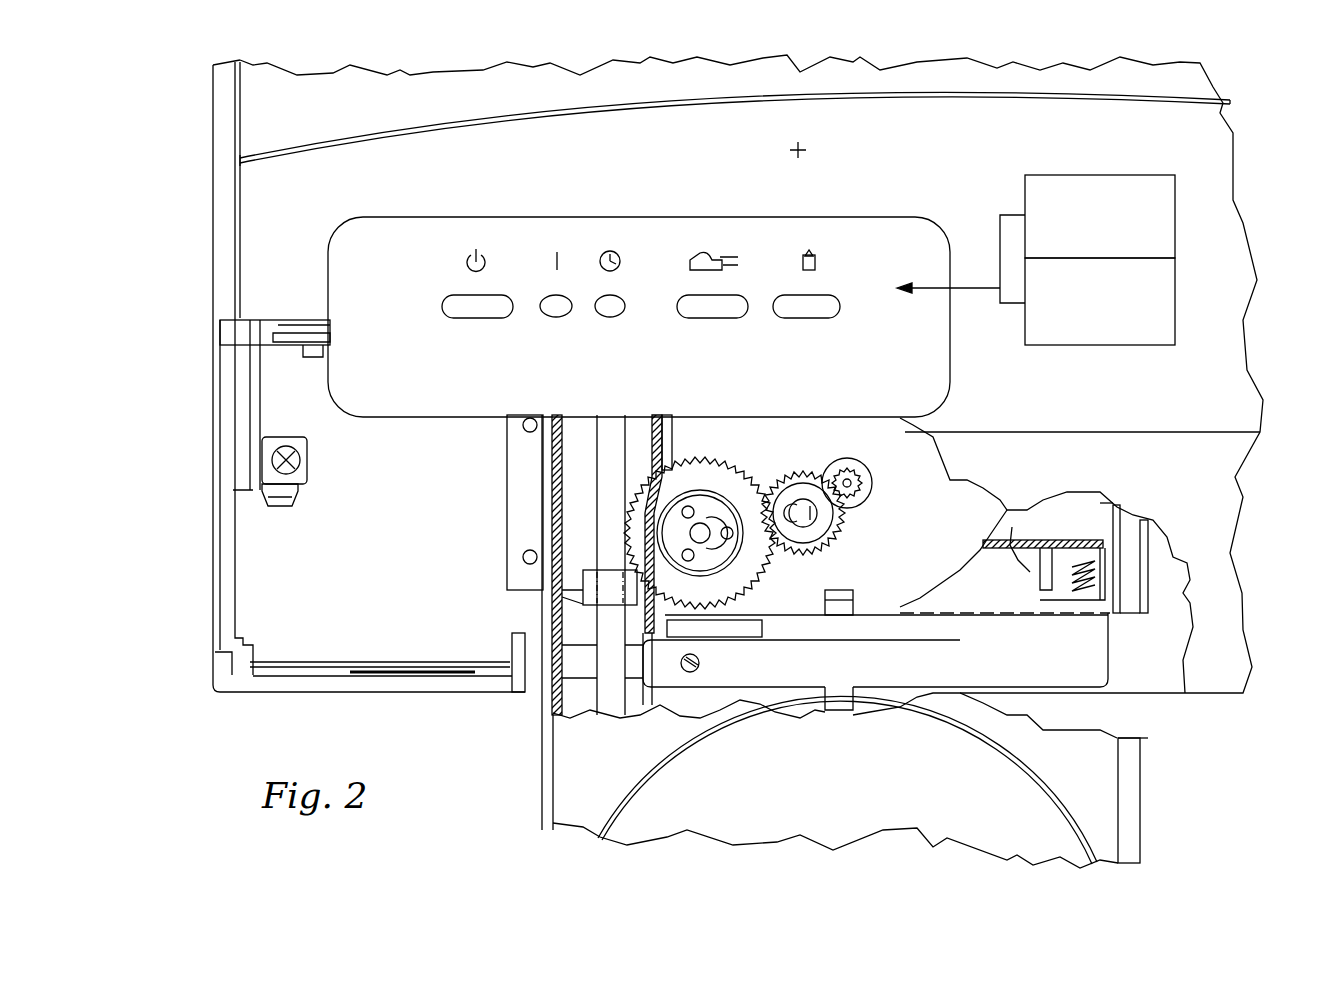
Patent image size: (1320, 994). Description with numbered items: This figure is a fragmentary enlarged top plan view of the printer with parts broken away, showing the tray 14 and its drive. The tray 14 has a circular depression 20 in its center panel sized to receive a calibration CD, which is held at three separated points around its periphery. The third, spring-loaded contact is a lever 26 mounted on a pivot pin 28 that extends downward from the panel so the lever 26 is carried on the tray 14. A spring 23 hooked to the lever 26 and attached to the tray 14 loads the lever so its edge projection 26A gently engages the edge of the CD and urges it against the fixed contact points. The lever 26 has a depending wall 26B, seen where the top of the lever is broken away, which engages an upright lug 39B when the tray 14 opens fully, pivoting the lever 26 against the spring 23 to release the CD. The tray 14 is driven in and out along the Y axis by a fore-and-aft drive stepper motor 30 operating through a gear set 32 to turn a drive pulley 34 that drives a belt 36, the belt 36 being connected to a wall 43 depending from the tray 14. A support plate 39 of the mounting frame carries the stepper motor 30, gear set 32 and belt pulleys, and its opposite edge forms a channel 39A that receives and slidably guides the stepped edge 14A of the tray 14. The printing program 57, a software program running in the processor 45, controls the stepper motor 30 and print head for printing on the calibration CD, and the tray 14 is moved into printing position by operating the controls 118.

The tray 14 is at (570, 758).
The stepped edge 14A is at (1130, 778).
The circular depression 20 is at (635, 817).
The spring 23 is at (1075, 578).
The lever 26 is at (782, 617).
The edge projection 26A is at (838, 697).
The depending wall 26B is at (1062, 540).
The pivot pin 28 is at (702, 661).
The fore-and-aft drive stepper motor 30 is at (842, 468).
The gear set 32 is at (790, 495).
The drive pulley 34 is at (707, 507).
The belt 36 is at (747, 447).
The support plate 39 is at (917, 468).
The channel 39A is at (1133, 573).
The upright lug 39B is at (1040, 573).
The wall 43 is at (650, 467).
The processor 45 is at (1120, 325).
The printing program 57 is at (1160, 205).
The controls 118 is at (745, 246).